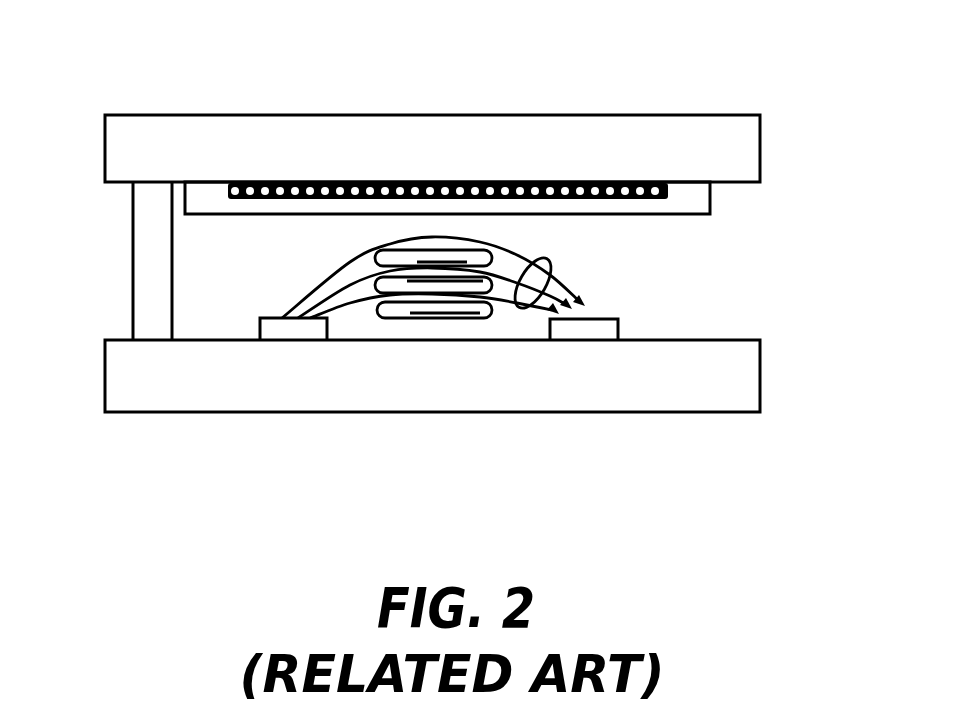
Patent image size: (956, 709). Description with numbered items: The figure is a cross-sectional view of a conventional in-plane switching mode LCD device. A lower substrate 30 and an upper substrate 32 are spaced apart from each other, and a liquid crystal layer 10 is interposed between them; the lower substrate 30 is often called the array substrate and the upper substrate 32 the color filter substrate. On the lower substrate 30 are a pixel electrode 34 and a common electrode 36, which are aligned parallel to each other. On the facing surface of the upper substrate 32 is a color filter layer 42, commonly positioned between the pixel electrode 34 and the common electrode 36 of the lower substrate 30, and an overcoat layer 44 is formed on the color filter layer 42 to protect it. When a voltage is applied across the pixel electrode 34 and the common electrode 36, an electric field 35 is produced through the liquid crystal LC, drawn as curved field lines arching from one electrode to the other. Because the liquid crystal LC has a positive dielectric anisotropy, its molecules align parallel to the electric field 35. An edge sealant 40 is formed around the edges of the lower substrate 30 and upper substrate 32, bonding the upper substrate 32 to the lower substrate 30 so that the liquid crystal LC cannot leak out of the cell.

The liquid crystal layer 10 is at (792, 223).
The lower substrate 30 is at (792, 323).
The upper substrate 32 is at (792, 110).
The pixel electrode 34 is at (293, 333).
The electric field 35 is at (519, 306).
The common electrode 36 is at (594, 333).
The edge sealant 40 is at (147, 267).
The color filter layer 42 is at (528, 182).
The overcoat layer 44 is at (690, 197).
The liquid crystal LC is at (413, 318).